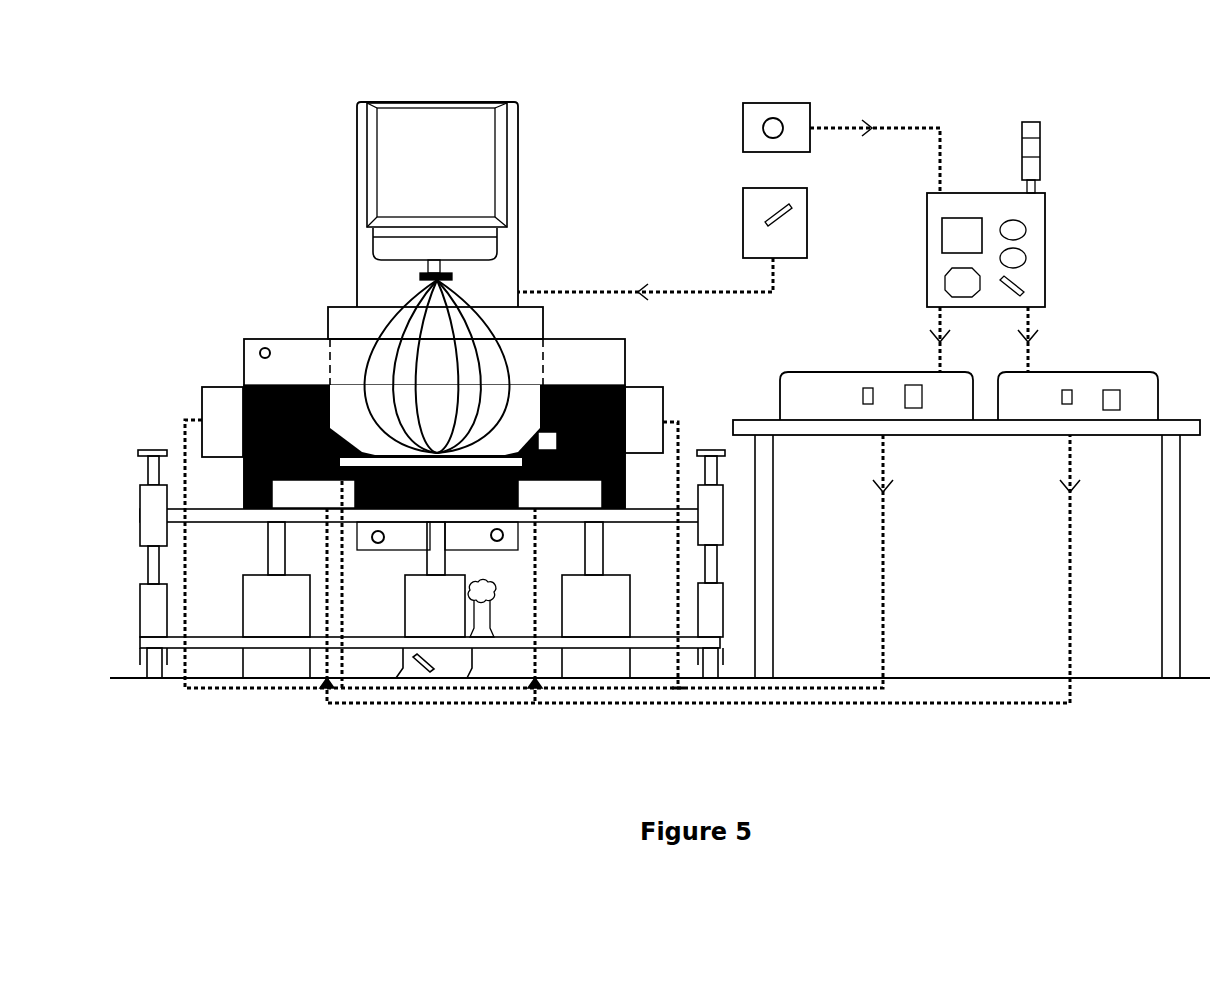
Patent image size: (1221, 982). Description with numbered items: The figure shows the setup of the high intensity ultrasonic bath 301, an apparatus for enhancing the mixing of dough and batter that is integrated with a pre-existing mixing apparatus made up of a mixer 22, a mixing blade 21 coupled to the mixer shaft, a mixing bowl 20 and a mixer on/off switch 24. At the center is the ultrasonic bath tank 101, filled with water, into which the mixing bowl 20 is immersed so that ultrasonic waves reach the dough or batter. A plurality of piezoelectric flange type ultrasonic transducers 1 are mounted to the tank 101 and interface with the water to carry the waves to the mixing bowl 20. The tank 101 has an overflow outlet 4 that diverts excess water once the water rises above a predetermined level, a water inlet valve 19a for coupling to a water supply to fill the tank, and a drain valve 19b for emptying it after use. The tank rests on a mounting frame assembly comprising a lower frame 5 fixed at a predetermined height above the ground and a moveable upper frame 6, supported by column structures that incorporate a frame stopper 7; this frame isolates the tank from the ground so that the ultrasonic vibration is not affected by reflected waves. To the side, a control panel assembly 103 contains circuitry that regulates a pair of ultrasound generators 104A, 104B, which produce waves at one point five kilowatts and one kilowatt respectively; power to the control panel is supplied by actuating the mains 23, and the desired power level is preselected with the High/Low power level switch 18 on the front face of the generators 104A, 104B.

The high intensity ultrasonic bath 301 is at (522, 148).
The ultrasonic bath tank 101 is at (287, 337).
The mixer 22 is at (437, 204).
The mixing bowl 20 is at (435, 323).
The mixing blade 21 is at (437, 366).
The overflow outlet 4 is at (271, 357).
The piezoelectric flange type ultrasonic transducer 1 is at (432, 447).
The moveable upper frame 6 is at (240, 524).
The lower frame 5 is at (220, 650).
The frame stopper 7 is at (431, 564).
The High/Low power level switch 18 is at (436, 600).
The water inlet valve 19a is at (375, 546).
The drain valve 19b is at (500, 547).
The mains 23 is at (777, 100).
The mixer on/off switch 24 is at (775, 223).
The control panel assembly 103 is at (986, 214).
The ultrasound generator 104A is at (876, 396).
The ultrasound generator 104B is at (1078, 396).